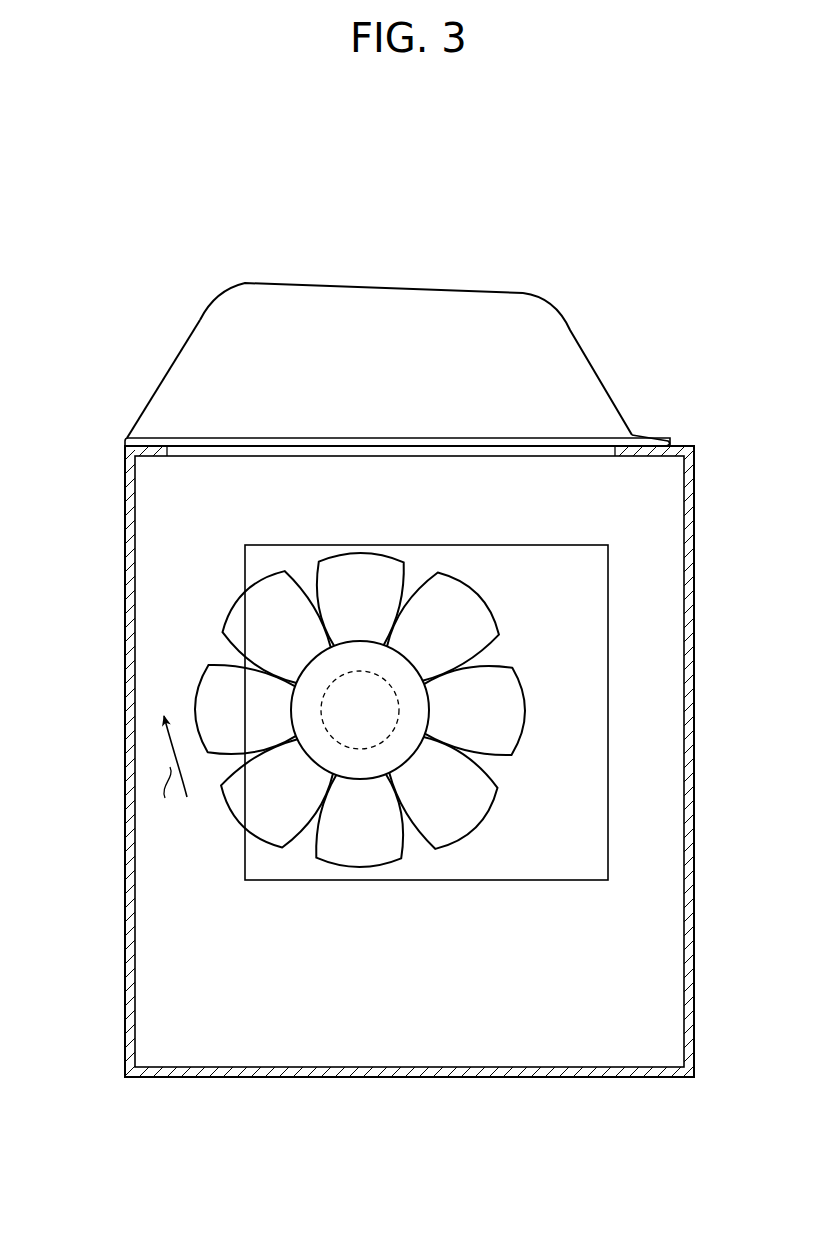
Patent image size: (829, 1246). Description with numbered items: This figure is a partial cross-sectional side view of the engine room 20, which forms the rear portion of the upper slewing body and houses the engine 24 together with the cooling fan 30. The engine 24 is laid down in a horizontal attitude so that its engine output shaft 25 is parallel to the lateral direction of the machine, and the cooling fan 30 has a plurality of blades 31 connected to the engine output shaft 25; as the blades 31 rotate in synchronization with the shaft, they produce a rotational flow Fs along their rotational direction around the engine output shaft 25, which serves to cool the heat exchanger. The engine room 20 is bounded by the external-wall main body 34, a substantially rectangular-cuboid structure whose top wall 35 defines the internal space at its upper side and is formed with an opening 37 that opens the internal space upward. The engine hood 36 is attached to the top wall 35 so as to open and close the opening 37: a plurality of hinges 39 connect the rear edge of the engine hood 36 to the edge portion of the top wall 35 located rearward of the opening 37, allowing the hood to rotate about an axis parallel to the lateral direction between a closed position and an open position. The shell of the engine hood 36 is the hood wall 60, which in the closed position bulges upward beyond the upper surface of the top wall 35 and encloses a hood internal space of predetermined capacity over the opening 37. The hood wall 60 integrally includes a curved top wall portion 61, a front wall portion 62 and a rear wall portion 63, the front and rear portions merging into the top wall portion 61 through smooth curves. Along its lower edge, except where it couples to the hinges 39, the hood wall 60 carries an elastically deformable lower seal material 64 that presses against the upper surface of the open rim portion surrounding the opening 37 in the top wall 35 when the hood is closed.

The engine room 20 is at (612, 290).
The engine 24 is at (483, 882).
The engine output shaft 25 is at (353, 672).
The cooling fan 30 is at (413, 716).
The blades 31 is at (347, 845).
The external-wall main body 34 is at (118, 474).
The top wall 35 is at (153, 446).
The engine hood 36 is at (317, 271).
The opening 37 is at (243, 456).
The hinges 39 is at (662, 437).
The hood wall 60 is at (406, 337).
The top wall portion 61 is at (373, 305).
The front wall portion 62 is at (200, 320).
The rear wall portion 63 is at (585, 343).
The lower seal material 64 is at (192, 447).
The rotational flow Fs is at (172, 772).